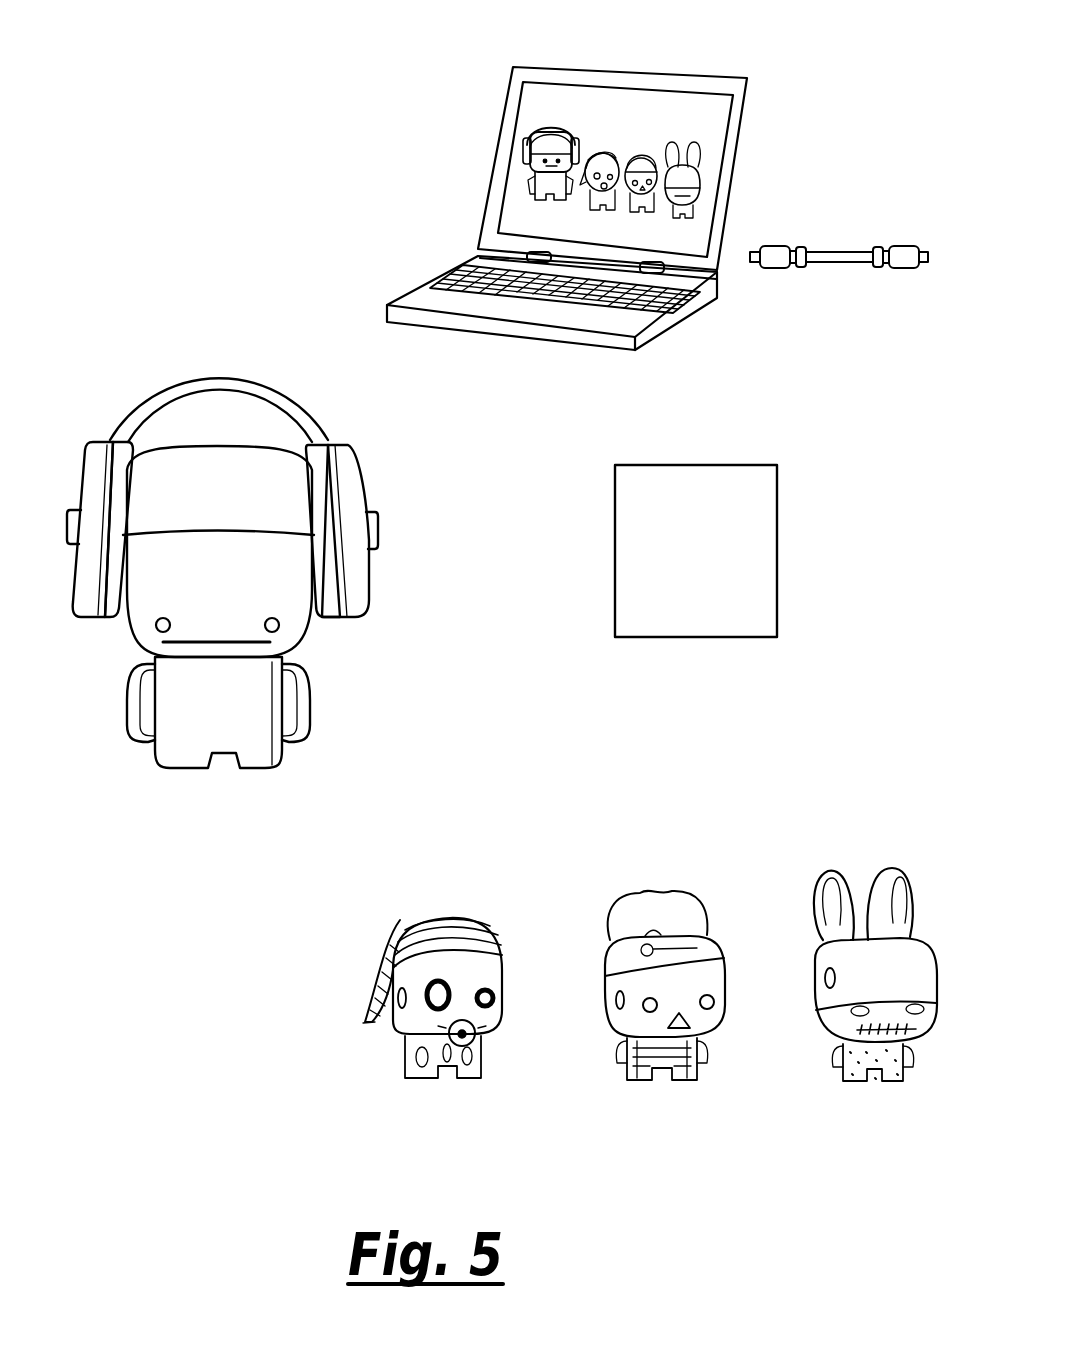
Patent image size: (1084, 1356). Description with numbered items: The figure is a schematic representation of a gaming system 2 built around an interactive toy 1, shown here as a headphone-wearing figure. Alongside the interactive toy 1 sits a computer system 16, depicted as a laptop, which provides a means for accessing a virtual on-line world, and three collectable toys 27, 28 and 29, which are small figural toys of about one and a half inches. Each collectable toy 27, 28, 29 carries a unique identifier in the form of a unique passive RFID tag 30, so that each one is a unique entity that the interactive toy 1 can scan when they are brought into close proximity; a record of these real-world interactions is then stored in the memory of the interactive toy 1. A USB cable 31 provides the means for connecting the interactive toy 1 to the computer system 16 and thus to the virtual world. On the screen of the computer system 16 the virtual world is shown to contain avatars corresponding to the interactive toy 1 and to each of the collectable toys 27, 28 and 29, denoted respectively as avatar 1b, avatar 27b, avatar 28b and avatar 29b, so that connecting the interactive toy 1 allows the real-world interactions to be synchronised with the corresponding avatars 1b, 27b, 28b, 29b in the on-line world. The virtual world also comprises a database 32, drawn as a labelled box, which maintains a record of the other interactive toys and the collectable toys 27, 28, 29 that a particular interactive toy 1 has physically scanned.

The interactive toy 1 is at (389, 493).
The avatar of interactive toy 1b is at (527, 147).
The gaming system 2 is at (150, 173).
The computer system 16 is at (733, 137).
The collectable toy 27 is at (450, 930).
The avatar of collectable toy 27b is at (610, 157).
The collectable toy 28 is at (660, 910).
The avatar of collectable toy 28b is at (647, 163).
The collectable toy 29 is at (845, 893).
The avatar of collectable toy 29b is at (700, 157).
The passive RFID tag 30 is at (396, 1000).
The USB cable 31 is at (835, 268).
The database 32 is at (696, 551).